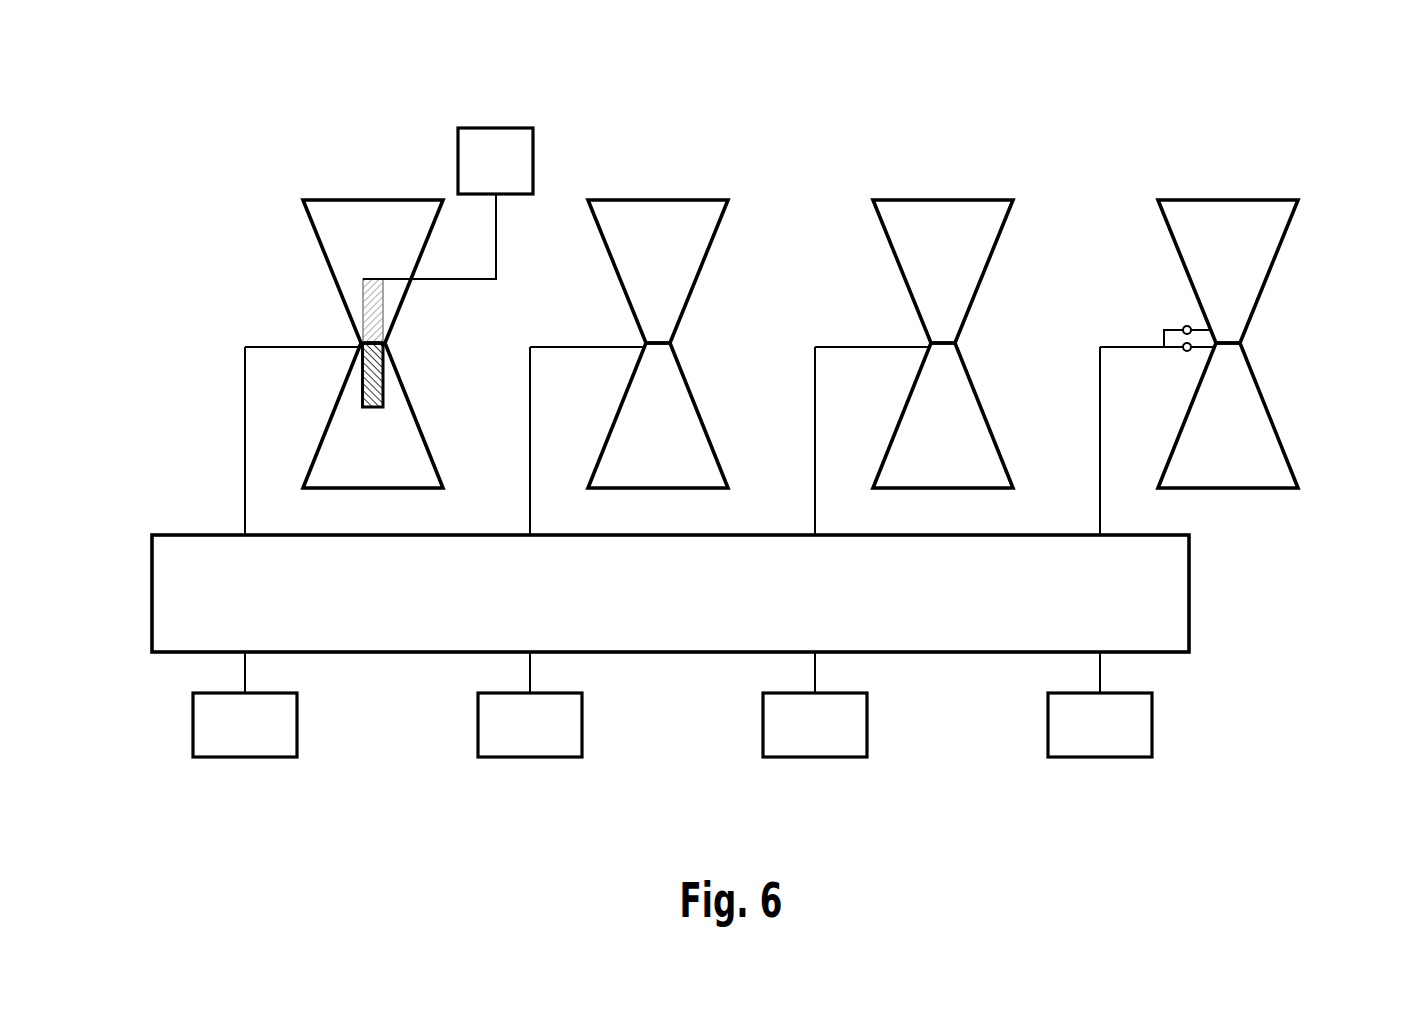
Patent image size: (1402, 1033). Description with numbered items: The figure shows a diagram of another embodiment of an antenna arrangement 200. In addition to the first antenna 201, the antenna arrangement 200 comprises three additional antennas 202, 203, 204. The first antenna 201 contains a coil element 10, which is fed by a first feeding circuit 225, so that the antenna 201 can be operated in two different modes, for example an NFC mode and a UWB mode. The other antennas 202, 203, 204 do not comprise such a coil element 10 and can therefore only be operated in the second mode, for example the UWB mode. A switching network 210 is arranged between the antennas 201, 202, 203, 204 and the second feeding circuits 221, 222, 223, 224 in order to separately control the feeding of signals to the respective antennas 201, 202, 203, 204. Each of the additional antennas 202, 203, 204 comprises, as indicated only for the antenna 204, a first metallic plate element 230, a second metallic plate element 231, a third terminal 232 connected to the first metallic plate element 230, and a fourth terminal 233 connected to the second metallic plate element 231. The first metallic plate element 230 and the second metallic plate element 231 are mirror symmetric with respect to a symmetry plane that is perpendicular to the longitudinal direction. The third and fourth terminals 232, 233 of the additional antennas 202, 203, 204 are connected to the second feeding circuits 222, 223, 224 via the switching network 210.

The antenna arrangement 200 is at (1278, 112).
The antenna 201 is at (363, 170).
The additional antenna 202 is at (647, 170).
The additional antenna 203 is at (931, 170).
The additional antenna 204 is at (1217, 170).
The coil element 10 is at (406, 392).
The first feeding circuit 225 is at (496, 128).
The switching network 210 is at (1189, 590).
The second feeding circuit 221 is at (245, 757).
The second feeding circuit 222 is at (530, 757).
The second feeding circuit 223 is at (815, 757).
The second feeding circuit 224 is at (1100, 757).
The first metallic plate element 230 is at (1287, 230).
The second metallic plate element 231 is at (1287, 453).
The third terminal 232 is at (1183, 326).
The fourth terminal 233 is at (1190, 352).